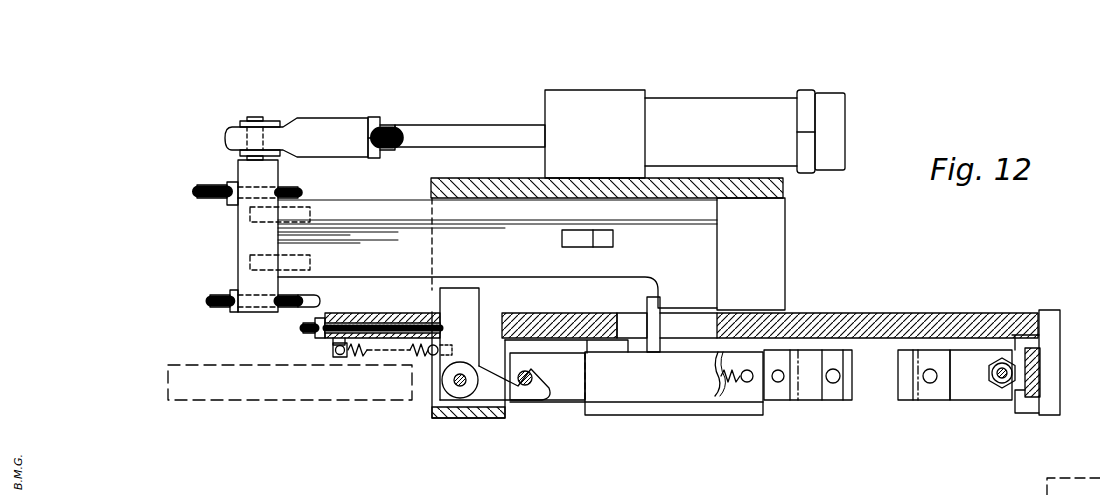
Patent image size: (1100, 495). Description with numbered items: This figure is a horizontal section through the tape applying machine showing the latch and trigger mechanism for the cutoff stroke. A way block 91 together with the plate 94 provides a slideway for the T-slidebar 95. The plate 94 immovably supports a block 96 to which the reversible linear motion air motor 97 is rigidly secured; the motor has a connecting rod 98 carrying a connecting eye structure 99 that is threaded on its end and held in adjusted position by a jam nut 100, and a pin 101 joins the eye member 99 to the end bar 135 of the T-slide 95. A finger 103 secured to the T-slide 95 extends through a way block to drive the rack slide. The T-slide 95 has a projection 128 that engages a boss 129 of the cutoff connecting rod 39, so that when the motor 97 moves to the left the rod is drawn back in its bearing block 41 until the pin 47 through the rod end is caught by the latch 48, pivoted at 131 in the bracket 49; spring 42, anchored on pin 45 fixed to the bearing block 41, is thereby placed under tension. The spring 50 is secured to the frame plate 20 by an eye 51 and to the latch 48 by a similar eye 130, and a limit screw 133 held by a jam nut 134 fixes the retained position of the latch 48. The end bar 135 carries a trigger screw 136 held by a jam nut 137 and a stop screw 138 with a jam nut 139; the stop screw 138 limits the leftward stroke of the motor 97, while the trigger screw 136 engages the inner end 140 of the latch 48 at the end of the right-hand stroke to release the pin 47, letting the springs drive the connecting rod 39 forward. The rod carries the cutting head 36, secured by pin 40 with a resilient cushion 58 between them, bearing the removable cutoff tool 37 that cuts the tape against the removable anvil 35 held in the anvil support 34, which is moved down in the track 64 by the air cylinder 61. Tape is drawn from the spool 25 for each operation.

The plate 20 is at (425, 313).
The spool of tape 25 is at (262, 398).
The anvil support 34 is at (1021, 397).
The removable anvil 35 is at (898, 380).
The cut off head 36 is at (808, 413).
The removable cut off tool 37 is at (846, 401).
The connecting rod 39 is at (565, 395).
The pin 40 is at (778, 383).
The bearing block 41 is at (660, 416).
The spring 42 is at (716, 398).
The pin 45 is at (747, 383).
The pin 47 is at (523, 386).
The latch 48 is at (490, 395).
The block 49 is at (433, 418).
The spring 50 is at (360, 355).
The eye 51 is at (333, 358).
The resilient cushion 58 is at (800, 388).
The air cylinder 61 is at (1015, 373).
The track 64 is at (1052, 405).
The way block 91 is at (556, 254).
The plate 94 is at (783, 186).
The T-slidebar 95 is at (705, 214).
The block 96 is at (616, 96).
The reversible linear motion air motor 97 is at (832, 102).
The connecting rod 98 is at (497, 125).
The connecting eye structure 99 is at (340, 128).
The jam nut 100 is at (375, 117).
The pin 101 is at (258, 117).
The finger 103 is at (598, 240).
The projection 128 is at (707, 290).
The boss 129 is at (660, 325).
The eye 130 is at (437, 345).
The pivot 131 is at (455, 380).
The limit screw 133 is at (303, 328).
The jam nut 134 is at (320, 340).
The end bar 135 is at (250, 238).
The trigger screw 136 is at (210, 300).
The jam nut 137 is at (235, 292).
The stop screw 138 is at (197, 192).
The jam nut 139 is at (232, 183).
The inner end 140 is at (460, 295).